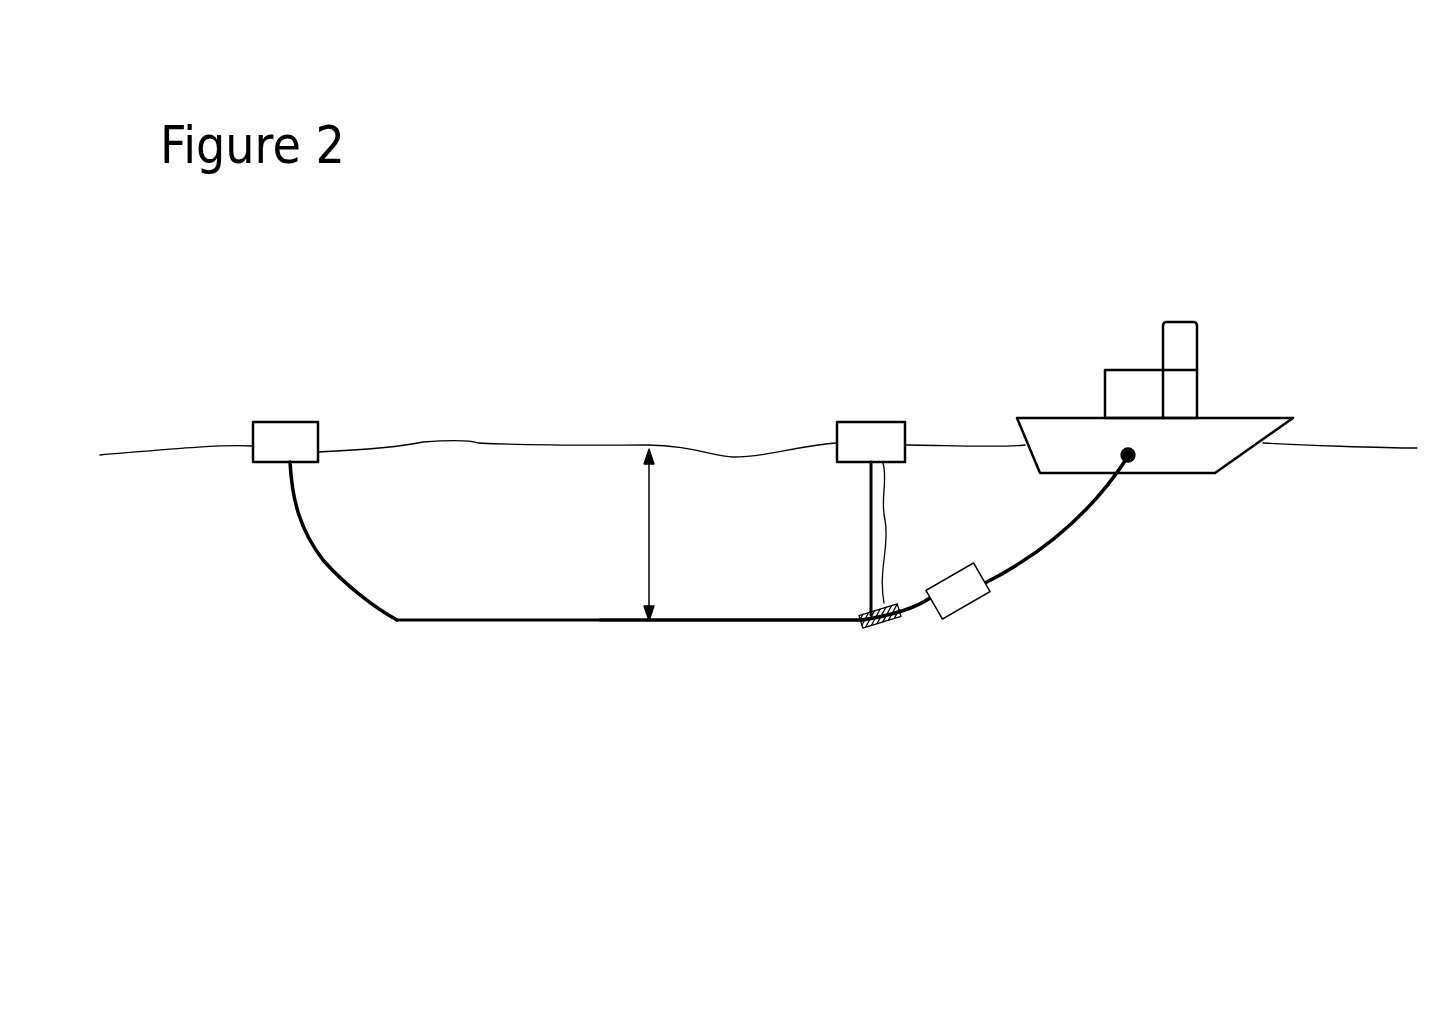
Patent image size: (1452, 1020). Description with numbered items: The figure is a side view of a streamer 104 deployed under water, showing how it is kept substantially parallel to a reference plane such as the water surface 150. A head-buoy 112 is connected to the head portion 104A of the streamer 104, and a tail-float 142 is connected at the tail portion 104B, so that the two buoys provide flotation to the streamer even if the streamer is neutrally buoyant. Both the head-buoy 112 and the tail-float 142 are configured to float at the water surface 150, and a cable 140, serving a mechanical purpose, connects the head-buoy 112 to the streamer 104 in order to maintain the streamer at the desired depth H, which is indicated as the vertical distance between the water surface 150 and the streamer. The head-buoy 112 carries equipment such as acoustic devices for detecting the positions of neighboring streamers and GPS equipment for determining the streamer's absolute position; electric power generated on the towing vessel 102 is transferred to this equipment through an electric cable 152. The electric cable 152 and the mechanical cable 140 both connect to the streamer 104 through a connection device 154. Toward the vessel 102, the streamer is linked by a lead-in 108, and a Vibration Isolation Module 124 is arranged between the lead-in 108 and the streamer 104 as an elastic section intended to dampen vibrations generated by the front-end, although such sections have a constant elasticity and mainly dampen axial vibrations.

The vessel 102 is at (1223, 435).
The streamer 104 is at (573, 622).
The head portion 104A is at (710, 622).
The tail portion 104B is at (300, 522).
The lead-in 108 is at (1020, 563).
The head-buoy 112 is at (868, 420).
The Vibration Isolation Module 124 is at (963, 612).
The cable 140 is at (868, 533).
The tail-float 142 is at (281, 420).
The water surface 150 is at (478, 443).
The electric cable 152 is at (883, 515).
The connection device 154 is at (895, 628).
The depth H is at (647, 525).